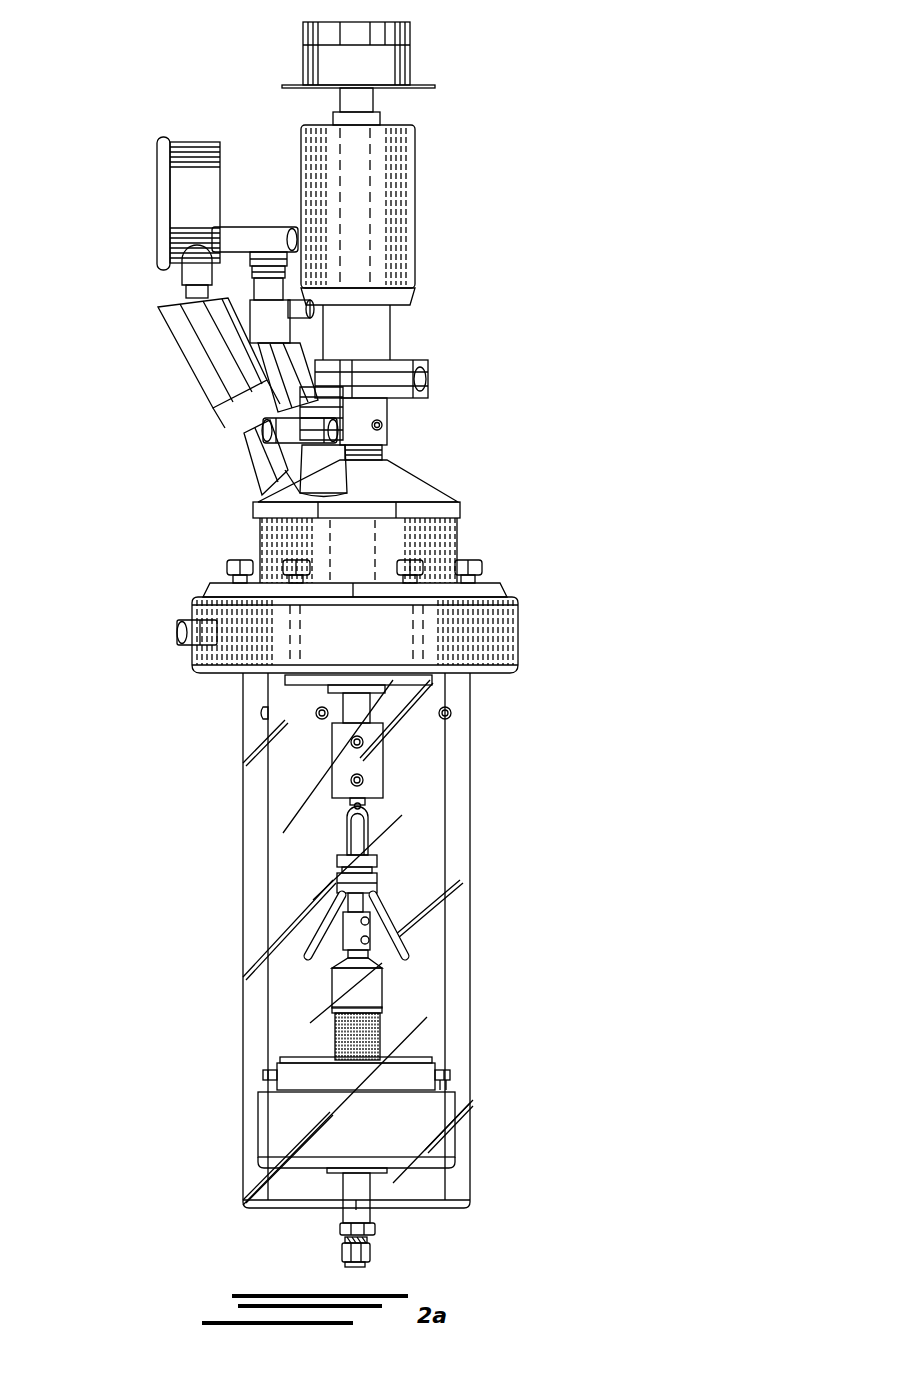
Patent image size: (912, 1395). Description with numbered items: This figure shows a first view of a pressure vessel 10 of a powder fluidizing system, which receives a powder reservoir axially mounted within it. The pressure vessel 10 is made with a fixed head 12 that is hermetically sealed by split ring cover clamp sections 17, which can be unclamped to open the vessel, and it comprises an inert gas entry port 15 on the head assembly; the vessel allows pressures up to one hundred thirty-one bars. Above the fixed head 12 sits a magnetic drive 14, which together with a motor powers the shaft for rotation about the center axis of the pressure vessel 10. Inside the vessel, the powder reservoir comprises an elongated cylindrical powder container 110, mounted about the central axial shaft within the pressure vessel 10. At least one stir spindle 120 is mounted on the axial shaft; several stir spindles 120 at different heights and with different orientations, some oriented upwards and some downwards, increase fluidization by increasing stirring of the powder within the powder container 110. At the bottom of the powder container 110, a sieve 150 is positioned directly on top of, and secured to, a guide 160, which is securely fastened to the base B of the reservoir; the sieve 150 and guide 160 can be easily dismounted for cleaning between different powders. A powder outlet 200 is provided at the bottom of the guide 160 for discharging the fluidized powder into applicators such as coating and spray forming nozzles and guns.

The pressure vessel 10 is at (243, 1025).
The fixed head 12 is at (250, 510).
The magnetic drive 14 is at (400, 193).
The inert gas entry port 15 is at (440, 379).
The split ring cover clamp sections 17 is at (190, 658).
The powder container 110 is at (445, 815).
The stir spindle 120 is at (345, 828).
The sieve 150 is at (425, 1057).
The guide 160 is at (412, 1077).
The base B is at (277, 1130).
The powder outlet 200 is at (357, 1250).